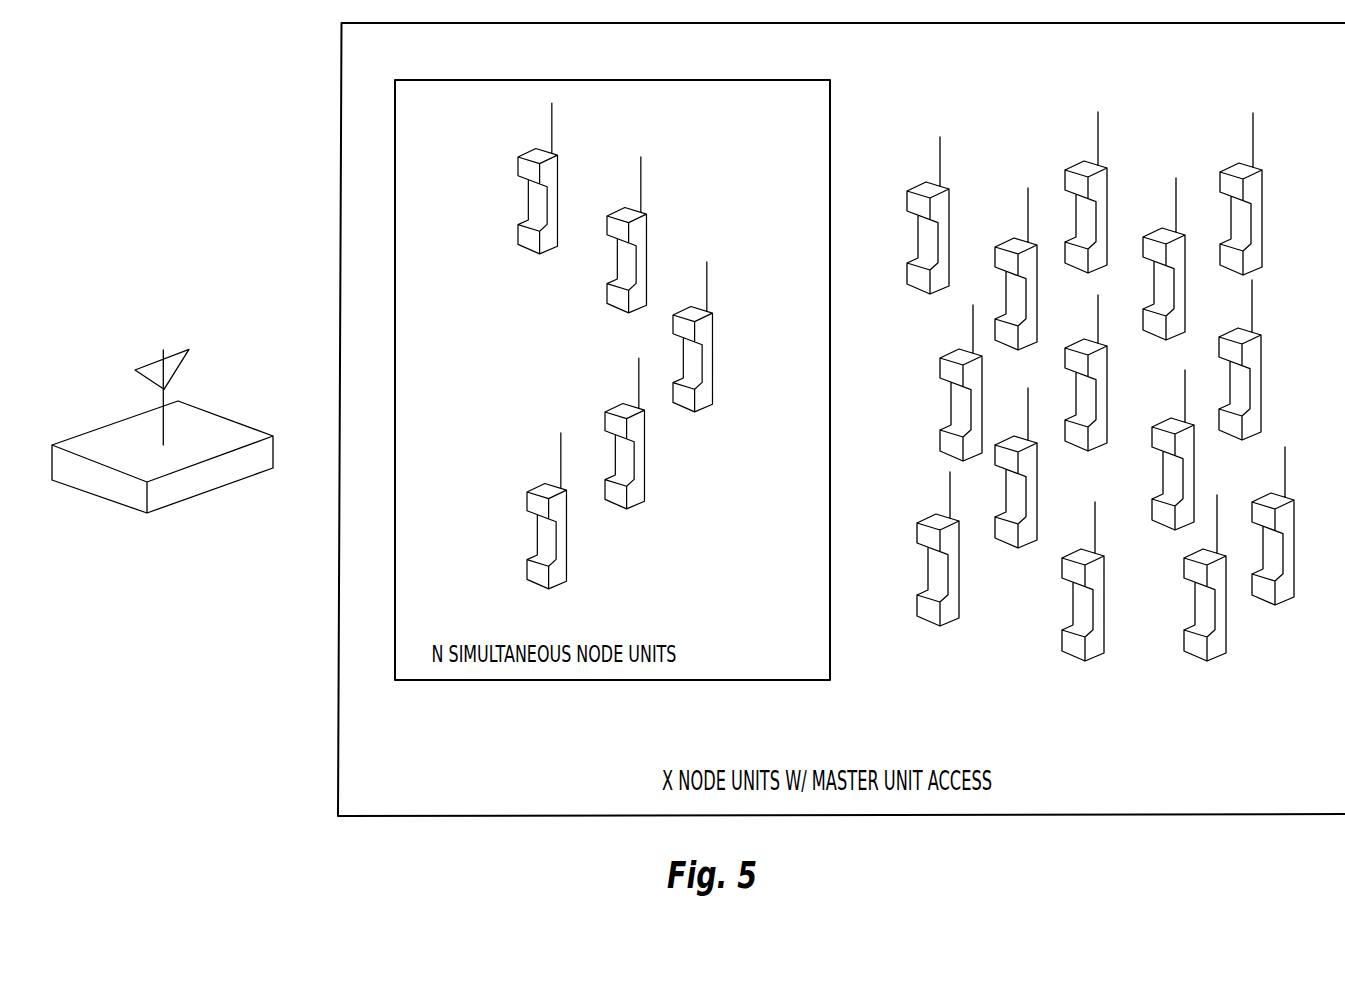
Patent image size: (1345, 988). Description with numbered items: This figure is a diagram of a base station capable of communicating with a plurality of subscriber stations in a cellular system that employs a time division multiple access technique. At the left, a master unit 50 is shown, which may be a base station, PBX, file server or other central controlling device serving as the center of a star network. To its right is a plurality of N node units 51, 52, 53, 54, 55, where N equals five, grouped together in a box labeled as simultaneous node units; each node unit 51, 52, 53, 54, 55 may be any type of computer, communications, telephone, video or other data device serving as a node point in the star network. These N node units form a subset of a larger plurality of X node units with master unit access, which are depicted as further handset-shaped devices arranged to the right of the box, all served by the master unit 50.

The master unit 50 is at (162, 431).
The node unit 51 is at (524, 178).
The node unit 52 is at (615, 235).
The node unit 53 is at (713, 337).
The node unit 54 is at (645, 433).
The node unit 55 is at (567, 511).